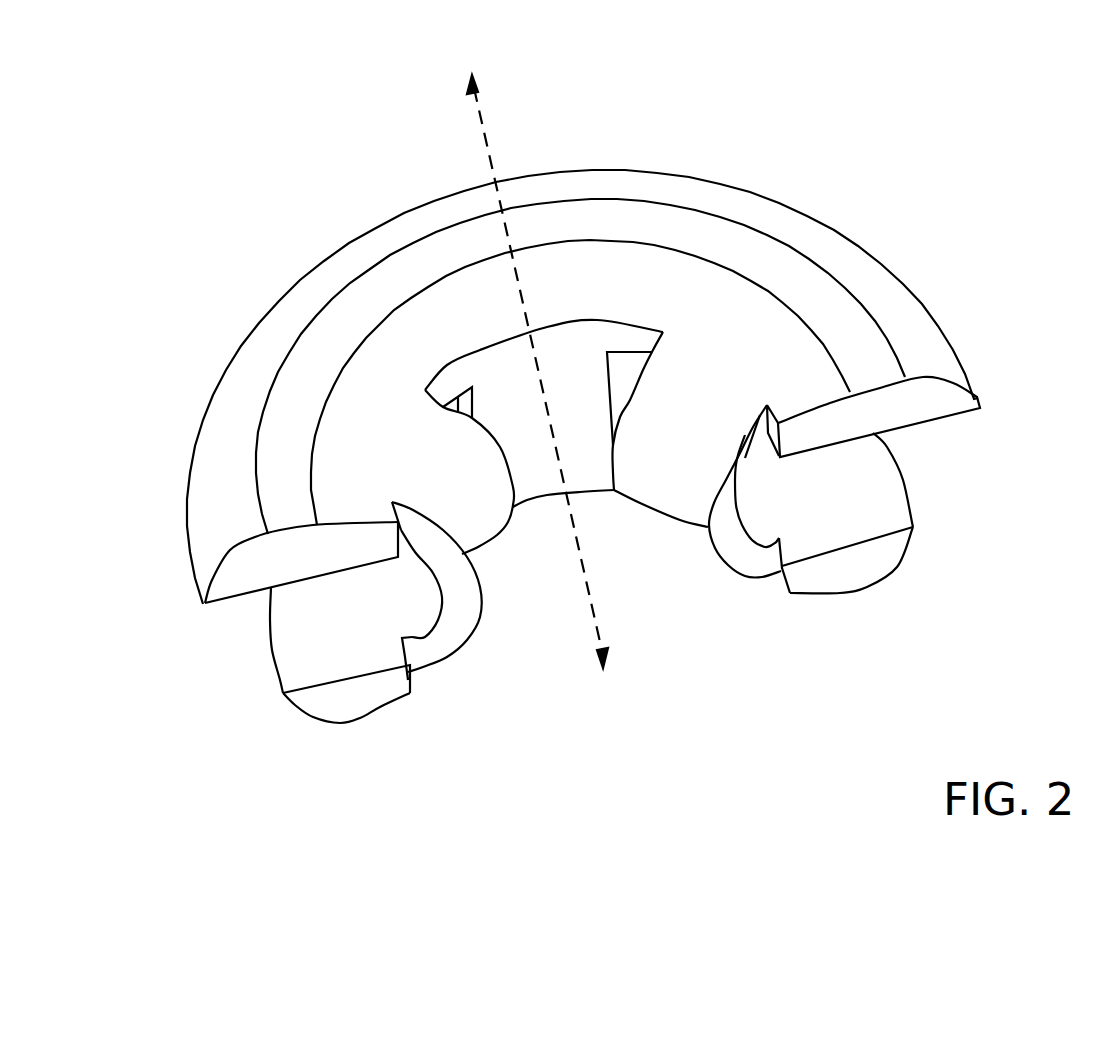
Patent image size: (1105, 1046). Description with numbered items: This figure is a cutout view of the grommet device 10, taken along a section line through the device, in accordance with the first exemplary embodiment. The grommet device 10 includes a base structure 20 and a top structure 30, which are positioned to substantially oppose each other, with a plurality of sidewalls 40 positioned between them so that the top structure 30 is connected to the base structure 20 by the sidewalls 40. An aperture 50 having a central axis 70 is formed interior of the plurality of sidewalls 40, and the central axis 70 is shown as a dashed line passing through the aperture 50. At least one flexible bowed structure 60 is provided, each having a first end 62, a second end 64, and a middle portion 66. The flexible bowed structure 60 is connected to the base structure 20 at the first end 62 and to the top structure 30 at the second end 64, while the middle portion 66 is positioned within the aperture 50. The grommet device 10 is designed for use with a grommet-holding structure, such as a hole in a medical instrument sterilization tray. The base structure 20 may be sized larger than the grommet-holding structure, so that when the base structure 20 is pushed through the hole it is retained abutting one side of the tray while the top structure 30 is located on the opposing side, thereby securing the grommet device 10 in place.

The grommet device 10 is at (878, 132).
The base structure 20 is at (342, 705).
The top structure 30 is at (255, 568).
The plurality of sidewalls 40 is at (500, 434).
The aperture 50 is at (542, 587).
The flexible bowed structure 60 is at (442, 487).
The first end 62 is at (423, 650).
The second end 64 is at (403, 517).
The middle portion 66 is at (467, 593).
The central axis 70 is at (488, 147).